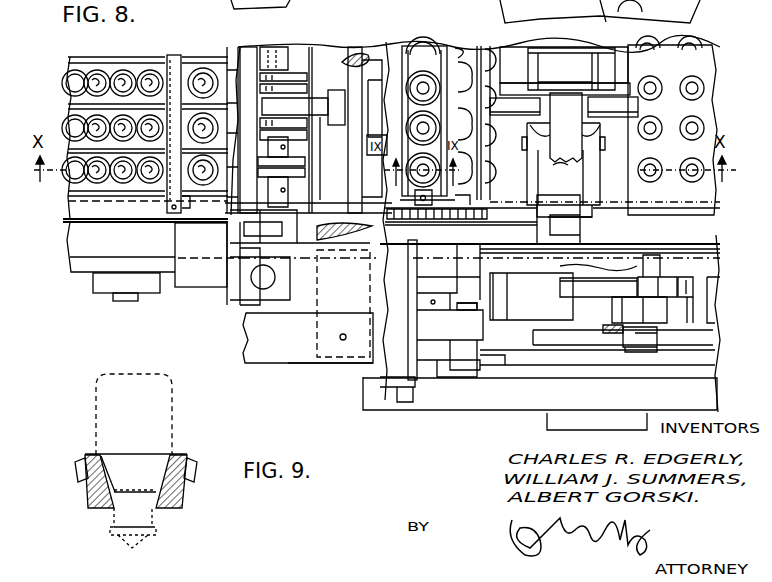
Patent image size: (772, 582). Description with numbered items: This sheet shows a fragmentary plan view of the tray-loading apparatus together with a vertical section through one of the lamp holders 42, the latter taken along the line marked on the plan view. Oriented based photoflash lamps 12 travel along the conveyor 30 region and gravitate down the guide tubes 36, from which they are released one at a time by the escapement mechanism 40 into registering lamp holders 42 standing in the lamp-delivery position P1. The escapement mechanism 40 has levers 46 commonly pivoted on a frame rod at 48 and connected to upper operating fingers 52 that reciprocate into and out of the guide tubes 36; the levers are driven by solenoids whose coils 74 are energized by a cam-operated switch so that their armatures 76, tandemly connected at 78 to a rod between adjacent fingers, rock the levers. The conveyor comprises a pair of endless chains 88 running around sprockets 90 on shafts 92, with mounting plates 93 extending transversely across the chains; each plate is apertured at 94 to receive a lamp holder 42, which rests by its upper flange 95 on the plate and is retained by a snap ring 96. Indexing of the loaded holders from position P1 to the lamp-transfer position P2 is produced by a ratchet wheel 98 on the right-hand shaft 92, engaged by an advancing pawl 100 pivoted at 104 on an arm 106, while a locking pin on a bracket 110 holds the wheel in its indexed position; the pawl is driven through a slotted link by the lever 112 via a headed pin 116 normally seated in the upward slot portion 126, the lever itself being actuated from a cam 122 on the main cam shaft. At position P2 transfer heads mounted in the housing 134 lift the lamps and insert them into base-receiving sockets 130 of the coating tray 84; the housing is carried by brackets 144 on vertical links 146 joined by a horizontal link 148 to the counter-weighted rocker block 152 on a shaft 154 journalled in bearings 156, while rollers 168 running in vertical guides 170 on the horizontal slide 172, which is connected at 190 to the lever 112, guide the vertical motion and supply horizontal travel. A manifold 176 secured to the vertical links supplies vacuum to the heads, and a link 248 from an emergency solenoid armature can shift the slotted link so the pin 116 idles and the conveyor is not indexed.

In FIG. 8, the based photoflash lamps 12 is at (122, 78).
In FIG. 9, the based photoflash lamps 12 is at (174, 392).
In FIG. 8, the conveyor 30 is at (78, 112).
In FIG. 8, the guide tubes 36 is at (238, 97).
In FIG. 8, the lamp-delivery position P1 is at (189, 122).
In FIG. 8, the lamp-transfer position P2 is at (427, 111).
In FIG. 8, the escapement mechanism 40 is at (312, 58).
In FIG. 8, the lamp holders 42 is at (440, 52).
In FIG. 9, the lamp holders 42 is at (88, 492).
In FIG. 8, the levers 46 is at (305, 165).
In FIG. 8, the pivot 48 is at (290, 255).
In FIG. 8, the upper operating fingers 52 is at (226, 204).
In FIG. 8, the coils 74 is at (384, 100).
In FIG. 8, the armatures 76 is at (320, 108).
In FIG. 8, the armature connection 78 is at (294, 93).
In FIG. 8, the coating tray 84 is at (668, 56).
In FIG. 8, the endless chains 88 is at (468, 219).
In FIG. 8, the sprockets 90 is at (510, 219).
In FIG. 8, the shafts 92 is at (125, 302).
In FIG. 8, the mounting plates 93 is at (440, 72).
In FIG. 9, the mounting plates 93 is at (190, 470).
In FIG. 9, the apertures 94 is at (103, 470).
In FIG. 9, the upper flanges 95 is at (85, 458).
In FIG. 9, the snap rings 96 is at (185, 480).
In FIG. 8, the ratchet wheel 98 is at (470, 370).
In FIG. 8, the advancing pawl 100 is at (500, 370).
In FIG. 8, the advancing-pawl pivot 104 is at (467, 320).
In FIG. 8, the arm 106 is at (597, 347).
In FIG. 8, the bracket 110 is at (385, 380).
In FIG. 8, the lever 112 is at (560, 293).
In FIG. 8, the headed pin 116 is at (657, 333).
In FIG. 8, the cam 122 is at (390, 402).
In FIG. 8, the upwardly extending slot portion 126 is at (616, 318).
In FIG. 8, the base-receiving sockets 130 is at (690, 174).
In FIG. 8, the housing 134 is at (585, 190).
In FIG. 8, the brackets 144 is at (603, 122).
In FIG. 8, the vertical links 146 is at (513, 107).
In FIG. 8, the horizontal link 148 is at (598, 70).
In FIG. 8, the rocker block 152 is at (510, 47).
In FIG. 8, the shaft 154 is at (352, 54).
In FIG. 8, the bearings 156 is at (255, 300).
In FIG. 8, the rollers 168 is at (582, 230).
In FIG. 8, the vertical guides 170 is at (548, 220).
In FIG. 8, the horizontal slide 172 is at (660, 246).
In FIG. 8, the manifold 176 is at (559, 174).
In FIG. 8, the connection 190 is at (658, 262).
In FIG. 8, the link 248 is at (610, 338).